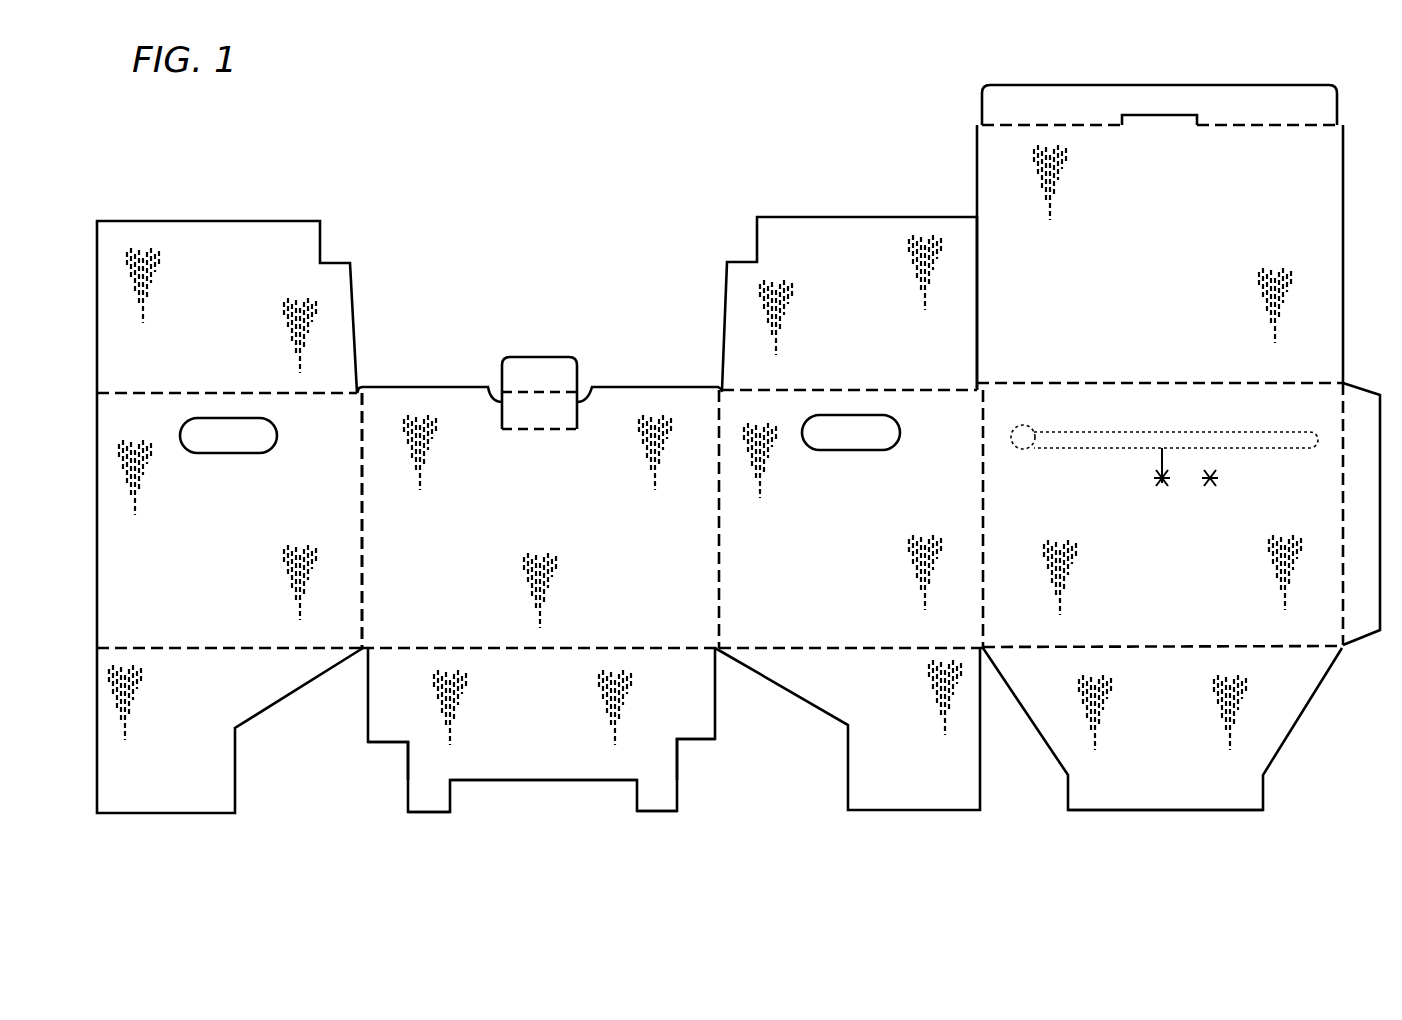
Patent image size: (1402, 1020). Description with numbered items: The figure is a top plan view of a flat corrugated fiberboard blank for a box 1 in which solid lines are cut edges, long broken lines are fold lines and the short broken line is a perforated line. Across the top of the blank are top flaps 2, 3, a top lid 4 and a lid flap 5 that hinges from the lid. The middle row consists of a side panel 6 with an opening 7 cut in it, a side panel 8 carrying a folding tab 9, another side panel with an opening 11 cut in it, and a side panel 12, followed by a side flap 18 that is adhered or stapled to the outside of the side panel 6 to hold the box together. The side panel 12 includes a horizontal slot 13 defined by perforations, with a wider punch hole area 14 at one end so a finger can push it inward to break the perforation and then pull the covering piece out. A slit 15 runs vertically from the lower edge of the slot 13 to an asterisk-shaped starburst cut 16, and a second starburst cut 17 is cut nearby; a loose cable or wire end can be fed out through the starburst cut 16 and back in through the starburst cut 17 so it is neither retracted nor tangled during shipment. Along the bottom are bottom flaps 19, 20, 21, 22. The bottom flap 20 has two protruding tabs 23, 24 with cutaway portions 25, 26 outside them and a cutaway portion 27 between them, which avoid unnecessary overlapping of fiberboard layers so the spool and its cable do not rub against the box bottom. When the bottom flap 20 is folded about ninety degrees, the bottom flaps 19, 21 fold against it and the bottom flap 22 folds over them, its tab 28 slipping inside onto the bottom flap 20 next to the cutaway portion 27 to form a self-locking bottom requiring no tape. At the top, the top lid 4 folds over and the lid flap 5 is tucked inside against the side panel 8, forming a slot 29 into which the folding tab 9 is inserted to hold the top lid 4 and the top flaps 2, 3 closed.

The box 1 is at (650, 128).
The top flap 2 is at (212, 324).
The top flap 3 is at (845, 321).
The top lid 4 is at (1148, 257).
The lid flap 5 is at (1082, 120).
The side panel 6 is at (212, 531).
The opening 7 is at (266, 452).
The side panel 8 is at (525, 531).
The folding tab 9 is at (540, 352).
The opening 11 is at (892, 450).
The side panel 12 is at (1148, 589).
The slot 13 is at (1128, 440).
The punch hole area 14 is at (1019, 452).
The slit 15 is at (1160, 458).
The starburst cut 16 is at (1164, 486).
The second starburst cut 17 is at (1211, 486).
The side flap 18 is at (833, 524).
The bottom flap 19 is at (150, 747).
The bottom flap 20 is at (523, 746).
The bottom flap 21 is at (900, 746).
The bottom flap 22 is at (1148, 746).
The protruding tab 23 is at (432, 814).
The protruding tab 24 is at (660, 813).
The cutaway portion 25 is at (388, 770).
The cutaway portion 26 is at (697, 770).
The cutaway portion 27 is at (537, 790).
The tab 28 is at (1143, 812).
The slot 29 is at (1152, 126).